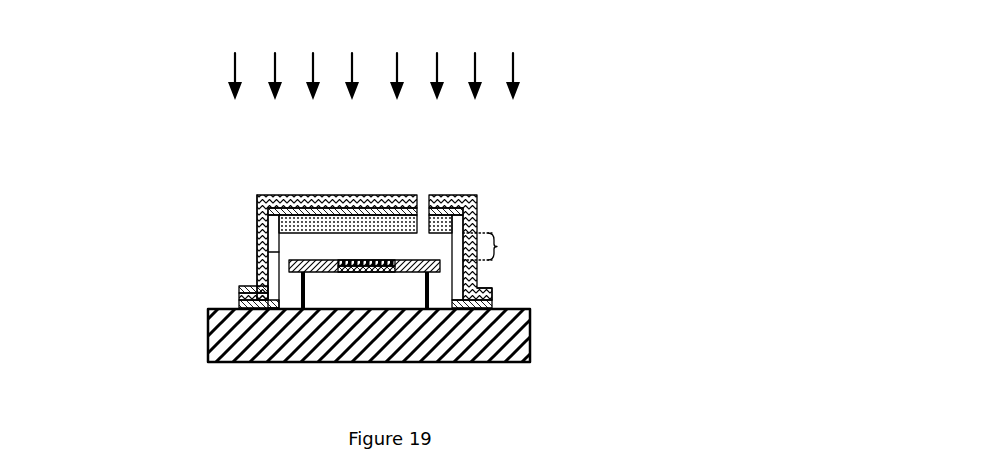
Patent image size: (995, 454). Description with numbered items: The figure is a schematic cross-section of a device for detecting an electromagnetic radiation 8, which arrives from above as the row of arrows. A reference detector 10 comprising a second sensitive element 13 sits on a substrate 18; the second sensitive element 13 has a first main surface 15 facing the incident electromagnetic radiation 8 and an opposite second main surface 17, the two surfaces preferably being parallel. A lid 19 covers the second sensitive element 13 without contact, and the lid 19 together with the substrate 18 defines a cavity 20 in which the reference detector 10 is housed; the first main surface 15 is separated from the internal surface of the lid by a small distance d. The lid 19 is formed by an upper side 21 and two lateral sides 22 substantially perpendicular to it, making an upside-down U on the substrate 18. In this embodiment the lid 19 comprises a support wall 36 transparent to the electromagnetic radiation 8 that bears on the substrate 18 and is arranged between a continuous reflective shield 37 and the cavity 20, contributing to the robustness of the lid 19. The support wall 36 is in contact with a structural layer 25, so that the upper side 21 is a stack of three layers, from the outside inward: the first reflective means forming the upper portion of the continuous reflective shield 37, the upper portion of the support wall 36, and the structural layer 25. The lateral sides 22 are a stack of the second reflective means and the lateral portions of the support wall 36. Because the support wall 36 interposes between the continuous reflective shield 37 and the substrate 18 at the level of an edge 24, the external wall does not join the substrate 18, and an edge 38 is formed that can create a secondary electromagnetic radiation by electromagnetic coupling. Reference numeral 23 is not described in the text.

The electromagnetic radiation 8 is at (513, 73).
The reference detector 10 is at (258, 252).
The second sensitive element 13 is at (384, 260).
The first main surface 15 is at (362, 260).
The second main surface 17 is at (362, 272).
The substrate 18 is at (530, 335).
The lid 19 is at (483, 217).
The cavity 20 is at (278, 262).
The upper side 21 is at (293, 195).
The lateral sides 22 is at (257, 266).
The aperture / gap 23 is at (421, 222).
The edge 24 is at (495, 287).
The structural layer 25 is at (390, 212).
The support wall 36 is at (452, 217).
The continuous reflective shield 37 is at (268, 200).
The edge 38 is at (493, 300).